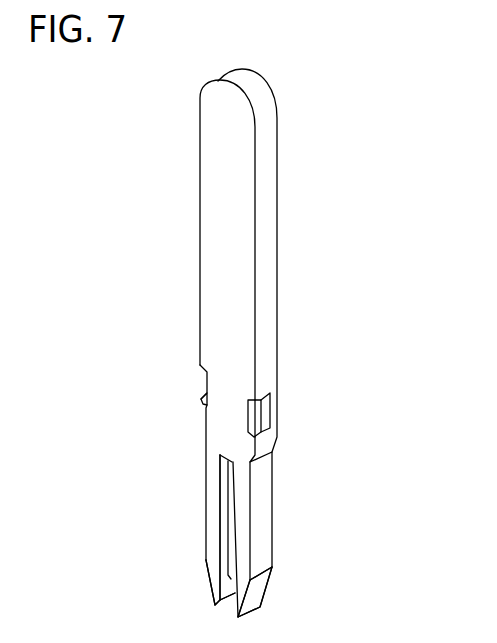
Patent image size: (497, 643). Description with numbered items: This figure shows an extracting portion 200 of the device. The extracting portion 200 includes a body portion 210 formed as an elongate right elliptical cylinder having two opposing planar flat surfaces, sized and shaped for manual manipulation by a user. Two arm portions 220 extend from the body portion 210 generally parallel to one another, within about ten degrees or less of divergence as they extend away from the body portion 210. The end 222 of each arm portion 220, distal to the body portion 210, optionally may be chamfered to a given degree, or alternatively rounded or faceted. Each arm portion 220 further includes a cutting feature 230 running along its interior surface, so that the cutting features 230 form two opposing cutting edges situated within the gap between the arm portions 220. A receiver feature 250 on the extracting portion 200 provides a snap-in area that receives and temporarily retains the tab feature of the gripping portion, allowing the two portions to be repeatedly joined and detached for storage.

The extracting portion 200 is at (372, 91).
The body portion 210 is at (216, 206).
The receiver feature 250 is at (207, 392).
The arm portion 220 is at (212, 507).
The cutting feature 230 is at (233, 542).
The end 222 is at (210, 585).